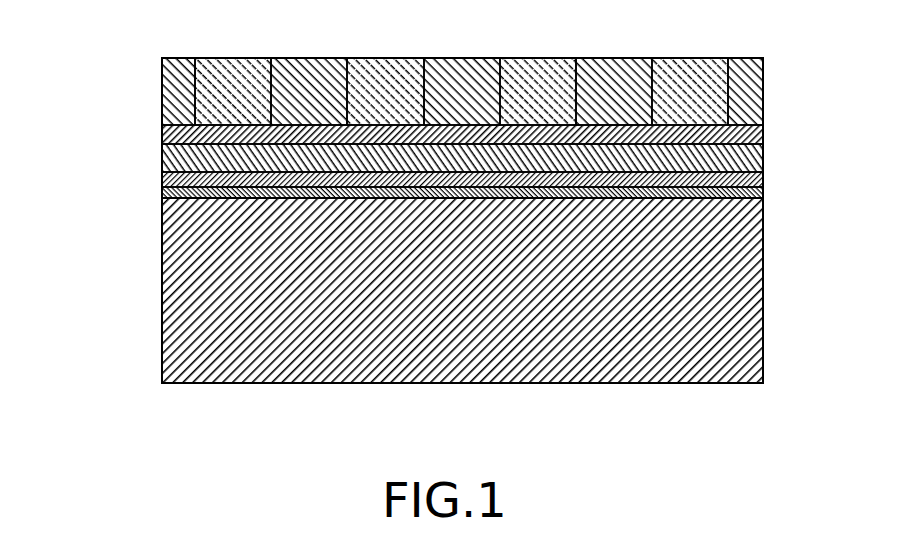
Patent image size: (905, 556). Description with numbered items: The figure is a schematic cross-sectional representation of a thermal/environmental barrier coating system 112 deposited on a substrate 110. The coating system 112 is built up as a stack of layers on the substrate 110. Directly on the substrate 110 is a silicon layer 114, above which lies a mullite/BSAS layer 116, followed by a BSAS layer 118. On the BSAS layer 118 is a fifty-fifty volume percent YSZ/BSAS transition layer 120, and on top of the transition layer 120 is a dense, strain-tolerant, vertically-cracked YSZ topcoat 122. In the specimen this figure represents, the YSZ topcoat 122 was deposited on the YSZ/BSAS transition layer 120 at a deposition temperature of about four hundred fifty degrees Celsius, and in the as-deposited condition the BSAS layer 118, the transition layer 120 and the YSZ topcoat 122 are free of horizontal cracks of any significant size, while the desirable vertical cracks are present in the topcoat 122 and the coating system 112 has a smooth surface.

The substrate 110 is at (625, 387).
The coating system 112 is at (447, 201).
The silicon layer 114 is at (163, 197).
The mullite/BSAS layer 116 is at (163, 181).
The BSAS layer 118 is at (163, 155).
The YSZ/BSAS transition layer 120 is at (163, 135).
The YSZ topcoat 122 is at (162, 82).